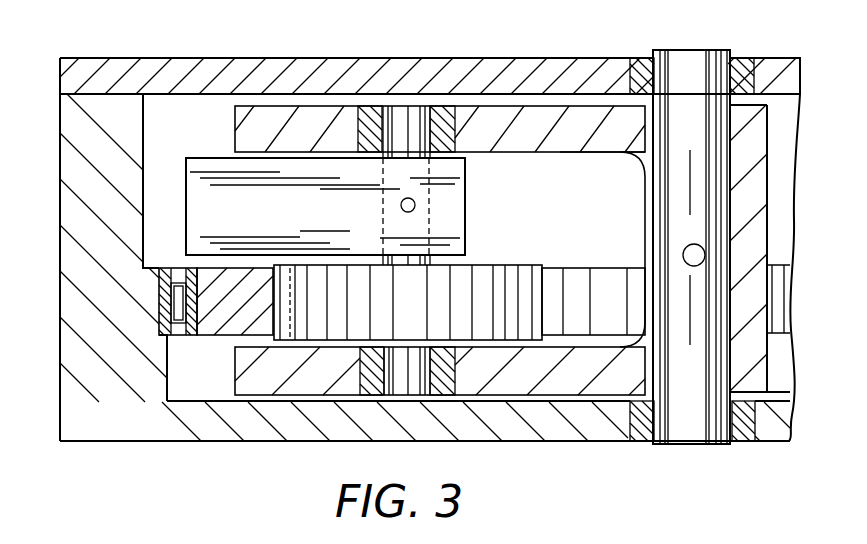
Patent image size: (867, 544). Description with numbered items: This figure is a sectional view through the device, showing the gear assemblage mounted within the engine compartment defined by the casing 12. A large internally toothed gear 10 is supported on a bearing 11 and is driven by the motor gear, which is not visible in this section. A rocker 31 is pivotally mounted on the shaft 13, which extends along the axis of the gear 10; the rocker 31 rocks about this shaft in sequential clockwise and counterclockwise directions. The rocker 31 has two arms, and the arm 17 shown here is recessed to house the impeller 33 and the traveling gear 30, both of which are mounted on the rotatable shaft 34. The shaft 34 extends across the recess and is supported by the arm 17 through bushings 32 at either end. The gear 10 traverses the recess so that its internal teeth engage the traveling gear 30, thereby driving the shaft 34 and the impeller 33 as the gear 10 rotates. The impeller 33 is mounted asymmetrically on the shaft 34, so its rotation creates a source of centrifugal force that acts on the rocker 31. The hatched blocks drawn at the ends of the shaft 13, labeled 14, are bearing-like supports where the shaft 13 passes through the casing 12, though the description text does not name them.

The internally toothed gear 10 is at (623, 247).
The bearing 11 is at (173, 268).
The casing 12 is at (279, 58).
The shaft 13 is at (690, 50).
The bearing 14 is at (638, 62).
The arm 17 is at (493, 153).
The traveling gear 30 is at (503, 268).
The rocker 31 is at (565, 153).
The bushings 32 is at (440, 110).
The impeller 33 is at (208, 166).
The shaft 34 is at (395, 120).